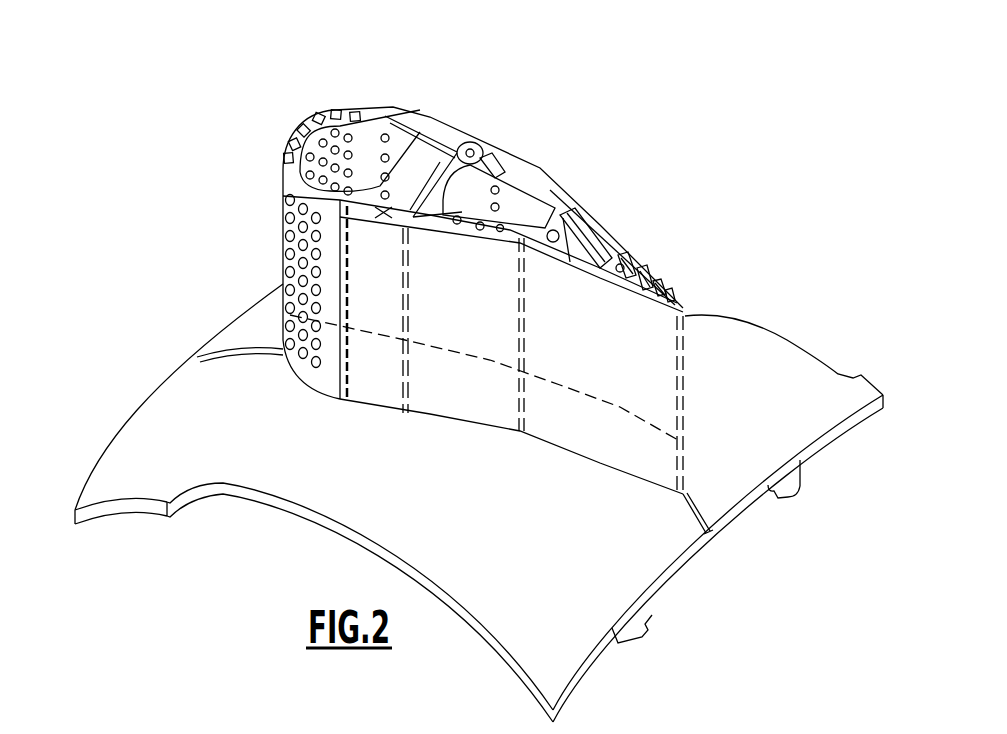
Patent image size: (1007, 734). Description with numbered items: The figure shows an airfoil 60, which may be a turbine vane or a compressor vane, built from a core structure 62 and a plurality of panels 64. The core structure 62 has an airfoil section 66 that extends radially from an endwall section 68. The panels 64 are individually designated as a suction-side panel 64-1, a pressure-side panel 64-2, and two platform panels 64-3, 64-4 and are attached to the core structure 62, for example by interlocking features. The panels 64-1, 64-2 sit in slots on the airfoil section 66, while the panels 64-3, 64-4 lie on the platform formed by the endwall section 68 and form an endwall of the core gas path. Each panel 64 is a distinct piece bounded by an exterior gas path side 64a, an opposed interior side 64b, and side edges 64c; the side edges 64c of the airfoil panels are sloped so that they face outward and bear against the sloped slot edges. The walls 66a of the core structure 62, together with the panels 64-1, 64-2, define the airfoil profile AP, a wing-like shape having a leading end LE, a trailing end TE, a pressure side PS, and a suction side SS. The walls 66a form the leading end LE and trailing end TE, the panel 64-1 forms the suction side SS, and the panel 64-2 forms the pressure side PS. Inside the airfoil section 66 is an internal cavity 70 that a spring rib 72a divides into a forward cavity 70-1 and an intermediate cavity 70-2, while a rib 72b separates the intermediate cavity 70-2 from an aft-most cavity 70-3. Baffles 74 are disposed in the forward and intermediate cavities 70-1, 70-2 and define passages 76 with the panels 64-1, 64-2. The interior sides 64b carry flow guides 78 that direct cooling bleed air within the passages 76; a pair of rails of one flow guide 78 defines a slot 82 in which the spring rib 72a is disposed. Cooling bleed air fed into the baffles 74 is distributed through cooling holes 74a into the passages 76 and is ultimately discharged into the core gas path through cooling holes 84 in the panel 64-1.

The airfoil 60 is at (100, 373).
The core structure 62 is at (275, 289).
The panels 64 is at (657, 550).
The exterior gas path side 64a is at (443, 407).
The interior side 64b is at (337, 533).
The side edges 64c is at (485, 143).
The suction-side panel 64-1 is at (540, 183).
The pressure-side panel 64-2 is at (340, 218).
The platform panel 64-3 is at (115, 475).
The platform panel 64-4 is at (230, 340).
The airfoil section 66 is at (268, 192).
The walls 66a is at (323, 110).
The endwall section 68 is at (656, 610).
The internal cavity 70 is at (398, 146).
The forward cavity 70-1 is at (299, 179).
The intermediate cavity 70-2 is at (532, 215).
The aft-most cavity 70-3 is at (618, 248).
The spring rib 72a is at (472, 140).
The rib 72b is at (560, 242).
The baffles 74 is at (420, 153).
The cooling holes 74a is at (348, 115).
The passages 76 is at (425, 123).
The flow guides 78 is at (455, 147).
The slot 82 is at (492, 133).
The cooling holes 84 is at (410, 378).
The leading end LE is at (282, 122).
The trailing end TE is at (700, 313).
The suction side SS is at (463, 110).
The pressure side PS is at (387, 405).
The airfoil profile AP is at (650, 420).